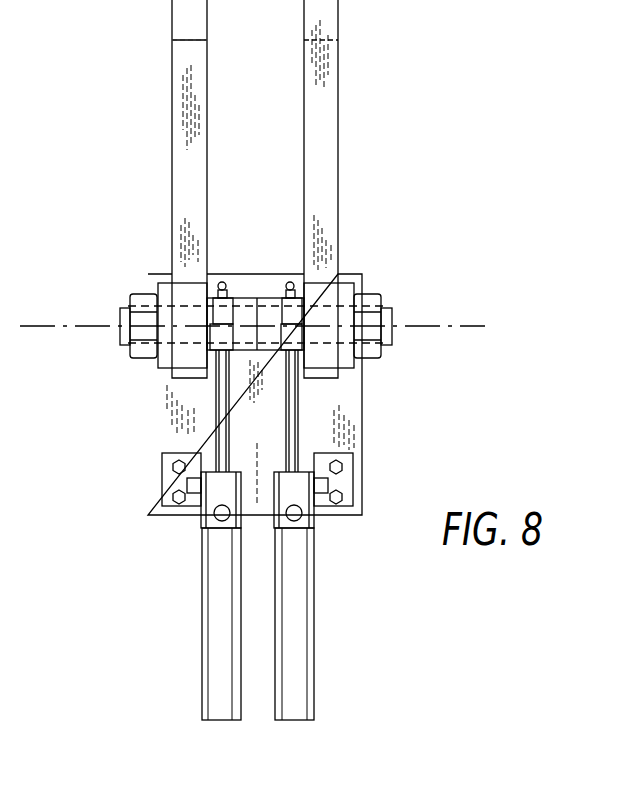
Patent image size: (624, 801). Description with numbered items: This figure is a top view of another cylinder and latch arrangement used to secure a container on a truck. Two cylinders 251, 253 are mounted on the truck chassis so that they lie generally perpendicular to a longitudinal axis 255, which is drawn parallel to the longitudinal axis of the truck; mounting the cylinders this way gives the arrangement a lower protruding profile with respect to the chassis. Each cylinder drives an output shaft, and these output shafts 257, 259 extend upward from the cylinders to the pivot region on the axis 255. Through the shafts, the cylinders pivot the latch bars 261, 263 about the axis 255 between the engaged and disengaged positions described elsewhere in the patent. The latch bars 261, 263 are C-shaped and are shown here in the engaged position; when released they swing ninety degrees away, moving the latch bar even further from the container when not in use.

The cylinder 251 is at (300, 593).
The cylinder 253 is at (222, 613).
The longitudinal axis 255 is at (415, 325).
The output shaft 257 is at (293, 423).
The output shaft 259 is at (222, 422).
The latch bar 261 is at (313, 200).
The latch bar 263 is at (190, 205).